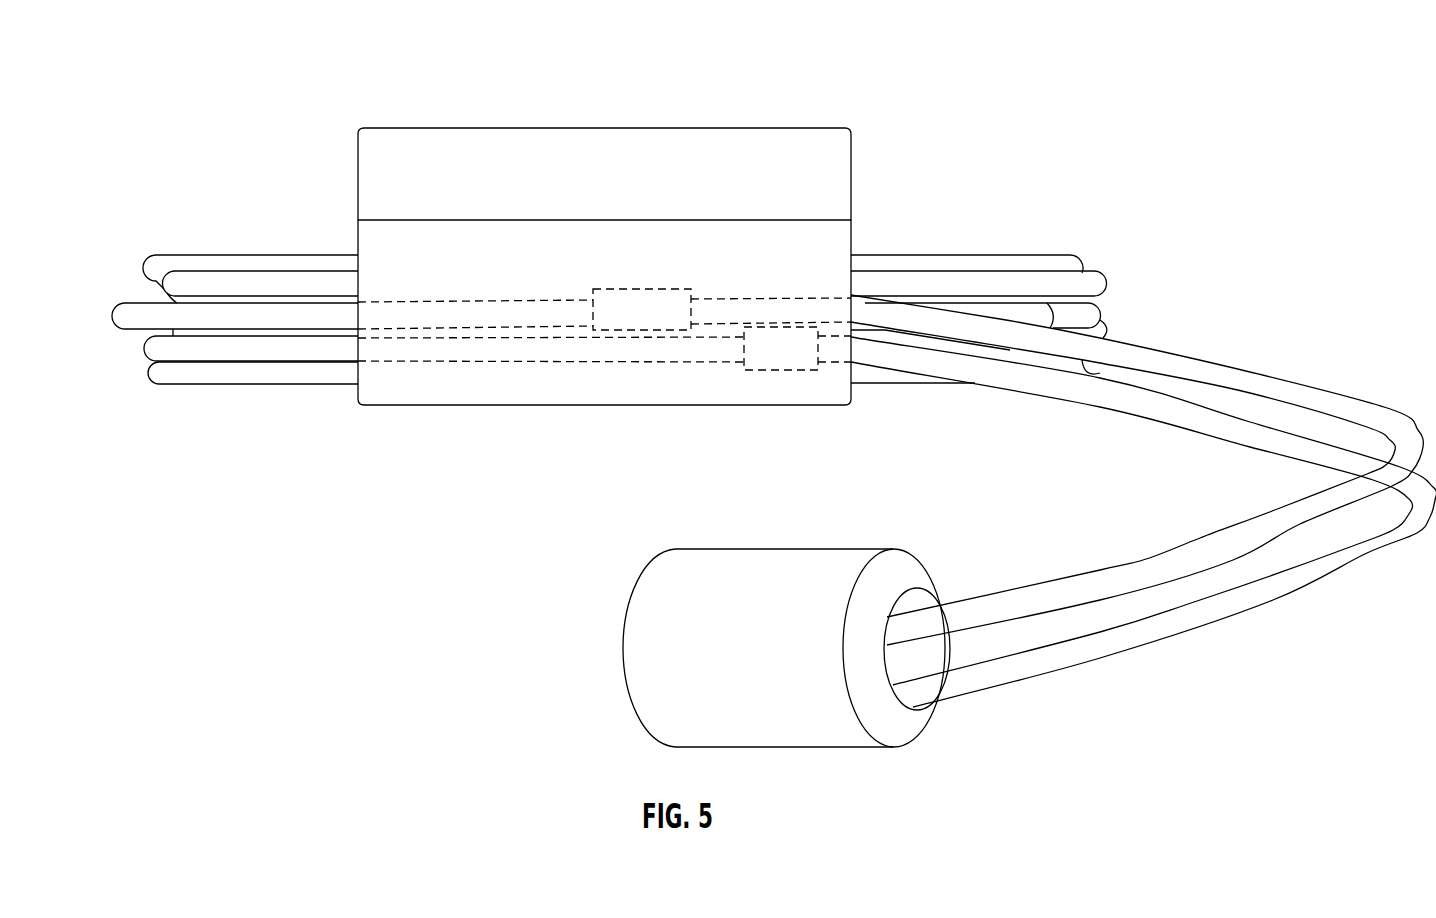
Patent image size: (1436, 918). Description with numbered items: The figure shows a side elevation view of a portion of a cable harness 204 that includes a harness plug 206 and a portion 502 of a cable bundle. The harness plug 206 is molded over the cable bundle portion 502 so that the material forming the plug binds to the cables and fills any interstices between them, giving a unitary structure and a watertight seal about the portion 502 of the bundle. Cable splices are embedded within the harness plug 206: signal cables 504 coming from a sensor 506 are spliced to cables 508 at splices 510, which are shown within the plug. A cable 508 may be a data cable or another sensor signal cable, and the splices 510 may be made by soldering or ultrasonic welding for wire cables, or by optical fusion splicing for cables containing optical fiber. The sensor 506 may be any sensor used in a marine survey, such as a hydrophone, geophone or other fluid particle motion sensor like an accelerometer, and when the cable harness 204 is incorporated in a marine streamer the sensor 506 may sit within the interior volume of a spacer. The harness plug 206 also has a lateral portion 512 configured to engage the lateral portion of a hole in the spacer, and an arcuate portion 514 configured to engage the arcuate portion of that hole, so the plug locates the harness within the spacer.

The cable harness 204 is at (312, 81).
The harness plug 206 is at (433, 119).
The portion of cable bundle 502 is at (945, 243).
The signal cables 504 is at (1137, 655).
The sensor 506 is at (775, 549).
The cables 508 is at (138, 317).
The splices 510 is at (638, 289).
The lateral portion 512 is at (727, 128).
The arcuate portion 514 is at (840, 237).